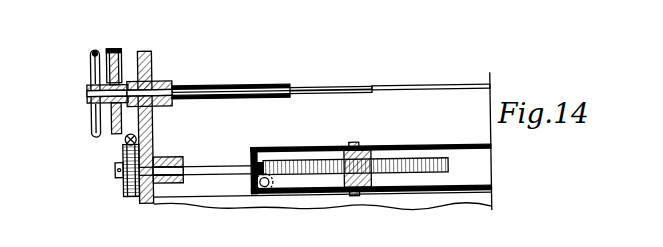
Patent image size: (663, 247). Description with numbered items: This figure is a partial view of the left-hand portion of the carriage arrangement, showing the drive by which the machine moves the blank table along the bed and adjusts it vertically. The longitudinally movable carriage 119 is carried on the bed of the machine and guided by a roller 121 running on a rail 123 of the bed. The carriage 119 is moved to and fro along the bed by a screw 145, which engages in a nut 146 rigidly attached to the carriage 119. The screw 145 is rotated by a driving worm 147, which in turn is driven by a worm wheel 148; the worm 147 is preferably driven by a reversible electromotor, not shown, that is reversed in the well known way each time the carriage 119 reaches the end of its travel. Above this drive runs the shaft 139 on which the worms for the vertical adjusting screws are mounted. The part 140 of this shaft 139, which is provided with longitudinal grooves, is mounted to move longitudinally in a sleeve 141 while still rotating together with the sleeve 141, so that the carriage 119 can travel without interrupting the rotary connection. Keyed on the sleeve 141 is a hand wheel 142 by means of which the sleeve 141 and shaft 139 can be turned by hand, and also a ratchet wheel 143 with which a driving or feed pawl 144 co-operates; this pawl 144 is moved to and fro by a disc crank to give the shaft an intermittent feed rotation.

The longitudinally movable carriage 119 is at (427, 149).
The roller 121 is at (263, 200).
The rail 123 is at (197, 200).
The shaft 139 is at (433, 97).
The grooved part of shaft 140 is at (307, 97).
The sleeve 141 is at (199, 87).
The hand wheel 142 is at (90, 53).
The ratchet wheel 143 is at (118, 136).
The feed pawl 144 is at (119, 49).
The screw 145 is at (297, 166).
The nut 146 is at (372, 150).
The driving worm 147 is at (139, 139).
The worm wheel 148 is at (128, 193).